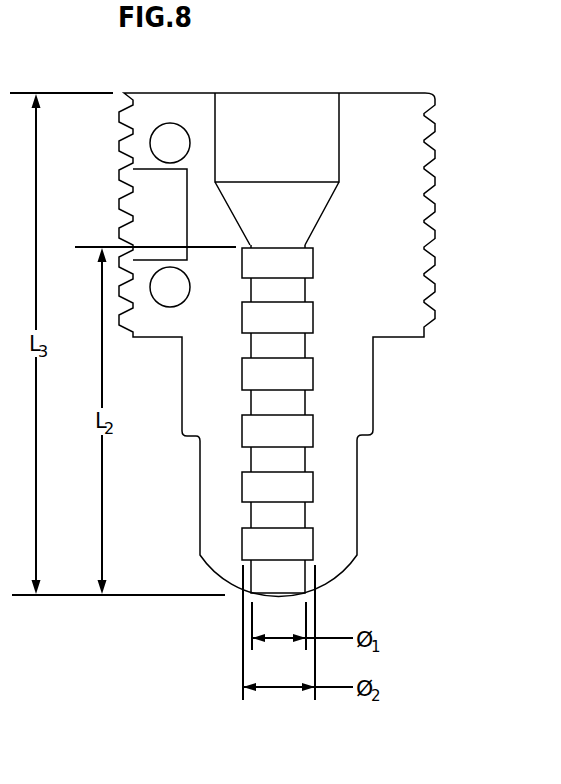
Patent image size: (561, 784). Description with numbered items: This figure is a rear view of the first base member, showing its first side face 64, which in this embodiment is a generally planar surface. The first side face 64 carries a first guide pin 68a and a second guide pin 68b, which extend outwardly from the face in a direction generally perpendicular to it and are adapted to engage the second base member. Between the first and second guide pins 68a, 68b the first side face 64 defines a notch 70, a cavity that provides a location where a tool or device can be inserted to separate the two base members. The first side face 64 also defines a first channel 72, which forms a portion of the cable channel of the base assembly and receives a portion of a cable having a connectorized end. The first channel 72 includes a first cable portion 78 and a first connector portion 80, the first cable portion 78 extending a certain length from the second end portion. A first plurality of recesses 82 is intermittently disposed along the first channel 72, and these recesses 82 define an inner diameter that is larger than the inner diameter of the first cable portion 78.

The first side face 64 is at (394, 137).
The first guide pin 68a is at (151, 146).
The second guide pin 68b is at (168, 307).
The notch 70 is at (152, 208).
The first channel 72 is at (343, 419).
The first cable portion 78 is at (305, 453).
The first connector portion 80 is at (340, 165).
The first plurality of recesses 82 is at (312, 425).